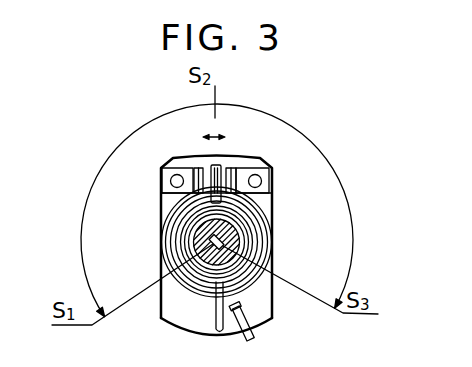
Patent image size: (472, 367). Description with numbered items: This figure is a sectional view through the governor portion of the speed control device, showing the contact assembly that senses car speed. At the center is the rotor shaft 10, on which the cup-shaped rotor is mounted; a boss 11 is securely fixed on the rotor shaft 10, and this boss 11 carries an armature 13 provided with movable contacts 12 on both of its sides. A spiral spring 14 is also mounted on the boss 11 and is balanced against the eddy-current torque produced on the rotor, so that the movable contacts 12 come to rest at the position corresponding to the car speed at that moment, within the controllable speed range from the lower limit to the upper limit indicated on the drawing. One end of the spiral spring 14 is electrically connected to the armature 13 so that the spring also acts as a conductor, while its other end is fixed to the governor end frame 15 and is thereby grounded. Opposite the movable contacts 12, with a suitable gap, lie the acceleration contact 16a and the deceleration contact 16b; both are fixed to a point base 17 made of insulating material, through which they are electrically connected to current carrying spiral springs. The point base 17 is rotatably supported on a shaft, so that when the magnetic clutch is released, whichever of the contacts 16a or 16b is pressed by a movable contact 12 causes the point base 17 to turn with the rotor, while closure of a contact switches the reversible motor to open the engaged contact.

The rotor shaft 10 is at (194, 241).
The boss 11 is at (239, 237).
The movable contacts 12 is at (222, 167).
The armature 13 is at (223, 201).
The spiral spring 14 is at (182, 298).
The governor end frame 15 is at (248, 340).
The acceleration contact 16a is at (188, 175).
The deceleration contact 16b is at (262, 181).
The point base 17 is at (273, 306).